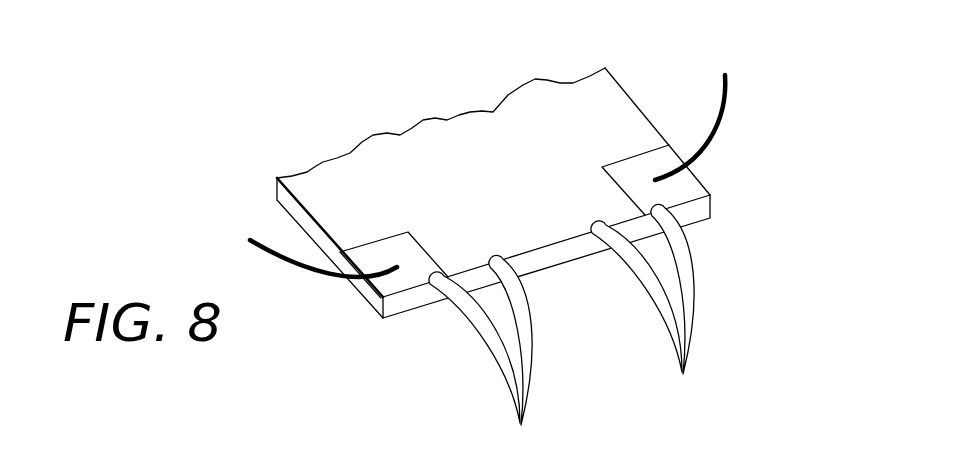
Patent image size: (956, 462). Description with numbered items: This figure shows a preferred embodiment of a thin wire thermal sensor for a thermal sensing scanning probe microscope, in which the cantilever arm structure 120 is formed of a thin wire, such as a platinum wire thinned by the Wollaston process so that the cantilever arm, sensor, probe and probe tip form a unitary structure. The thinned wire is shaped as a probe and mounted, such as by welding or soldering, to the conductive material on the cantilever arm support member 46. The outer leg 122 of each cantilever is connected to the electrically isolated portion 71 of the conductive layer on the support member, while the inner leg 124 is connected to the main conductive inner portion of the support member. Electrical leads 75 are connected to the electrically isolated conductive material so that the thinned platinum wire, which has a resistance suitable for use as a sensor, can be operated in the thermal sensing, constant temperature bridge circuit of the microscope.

The cantilever arm support member 46 is at (487, 127).
The electrically isolated portion of the conductive layer 71 is at (389, 288).
The electrical leads 75 is at (262, 241).
The cantilever arm structure 120 is at (593, 314).
The outer leg 122 is at (618, 314).
The inner leg 124 is at (533, 320).